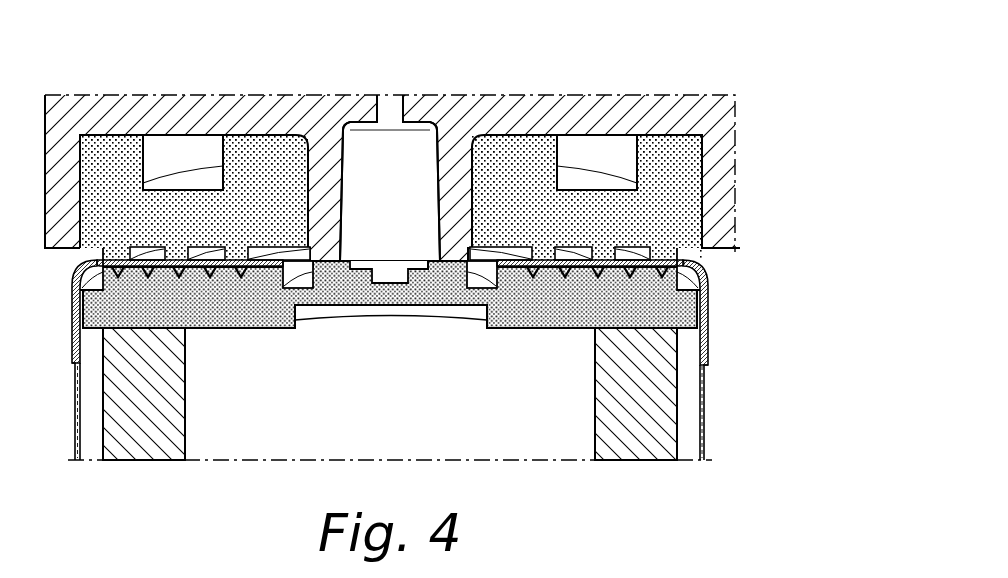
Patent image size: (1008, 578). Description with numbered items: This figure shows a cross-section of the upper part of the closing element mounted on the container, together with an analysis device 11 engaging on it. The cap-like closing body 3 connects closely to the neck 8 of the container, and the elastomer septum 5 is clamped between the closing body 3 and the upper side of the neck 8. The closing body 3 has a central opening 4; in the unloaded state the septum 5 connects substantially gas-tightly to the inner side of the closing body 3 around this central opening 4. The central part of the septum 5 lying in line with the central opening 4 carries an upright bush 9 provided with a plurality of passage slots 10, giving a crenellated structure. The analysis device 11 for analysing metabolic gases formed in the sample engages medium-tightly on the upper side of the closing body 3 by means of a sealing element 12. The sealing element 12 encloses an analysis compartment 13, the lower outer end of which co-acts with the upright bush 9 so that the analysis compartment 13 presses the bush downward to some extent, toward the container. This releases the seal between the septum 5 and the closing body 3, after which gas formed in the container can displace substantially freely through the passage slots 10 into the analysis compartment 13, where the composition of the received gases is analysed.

The closing body 3 is at (710, 345).
The central opening 4 is at (307, 262).
The septum 5 is at (245, 310).
The neck 8 is at (647, 422).
The upright bush 9 is at (447, 277).
The passage slots 10 is at (358, 267).
The analysis device 11 is at (627, 112).
The sealing element 12 is at (263, 172).
The analysis compartment 13 is at (373, 206).